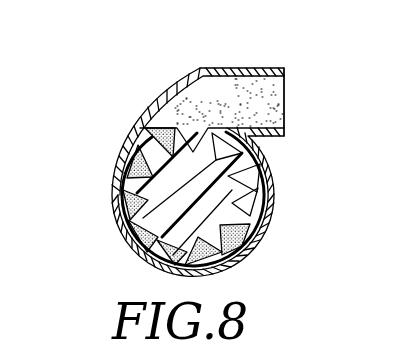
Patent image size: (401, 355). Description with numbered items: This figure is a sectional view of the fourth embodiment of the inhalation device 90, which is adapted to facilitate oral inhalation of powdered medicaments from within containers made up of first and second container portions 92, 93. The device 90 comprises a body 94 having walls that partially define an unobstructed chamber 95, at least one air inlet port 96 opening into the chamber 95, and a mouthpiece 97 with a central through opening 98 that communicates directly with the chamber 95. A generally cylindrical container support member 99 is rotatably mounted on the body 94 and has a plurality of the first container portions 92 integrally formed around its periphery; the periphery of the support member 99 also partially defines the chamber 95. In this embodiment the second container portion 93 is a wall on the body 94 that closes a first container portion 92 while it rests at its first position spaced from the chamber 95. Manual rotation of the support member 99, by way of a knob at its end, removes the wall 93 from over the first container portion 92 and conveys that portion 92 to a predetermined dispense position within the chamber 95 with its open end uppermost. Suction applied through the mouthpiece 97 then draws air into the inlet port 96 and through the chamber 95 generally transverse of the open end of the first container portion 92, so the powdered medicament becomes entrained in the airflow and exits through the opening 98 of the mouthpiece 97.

The device 90 is at (167, 62).
The first container portion 92 is at (243, 164).
The second container portion 93 is at (128, 143).
The body 94 is at (267, 200).
The chamber 95 is at (190, 102).
The air inlet port 96 is at (142, 122).
The mouthpiece 97 is at (263, 77).
The central through opening 98 is at (275, 87).
The container support member 99 is at (138, 242).